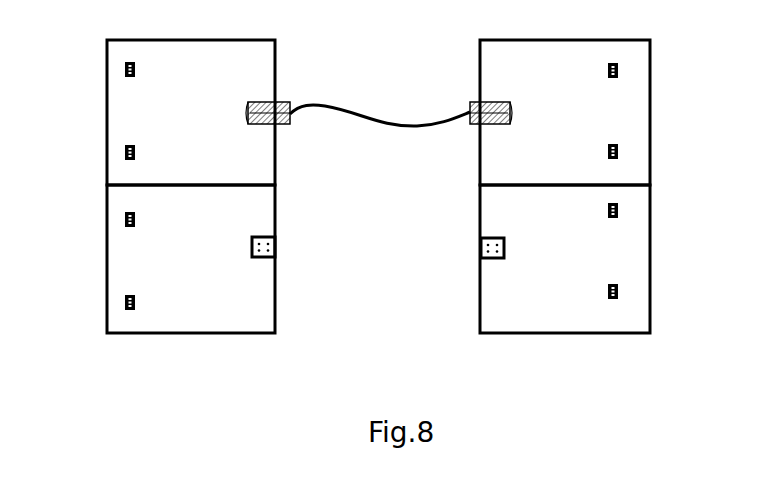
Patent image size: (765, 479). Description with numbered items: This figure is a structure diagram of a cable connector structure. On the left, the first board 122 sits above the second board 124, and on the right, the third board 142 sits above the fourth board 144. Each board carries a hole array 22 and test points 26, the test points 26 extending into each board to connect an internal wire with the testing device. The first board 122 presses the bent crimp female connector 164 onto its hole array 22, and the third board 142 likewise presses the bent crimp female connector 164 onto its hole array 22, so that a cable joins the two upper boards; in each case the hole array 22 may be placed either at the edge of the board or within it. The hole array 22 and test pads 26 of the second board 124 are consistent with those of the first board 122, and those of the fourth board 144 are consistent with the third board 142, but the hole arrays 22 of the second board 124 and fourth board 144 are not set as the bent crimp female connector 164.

The hole array 22 is at (473, 247).
The test point 26 is at (122, 297).
The first board 122 is at (193, 71).
The second board 124 is at (193, 298).
The third board 142 is at (567, 58).
The fourth board 144 is at (567, 298).
The bent crimp female connector 164 is at (283, 91).